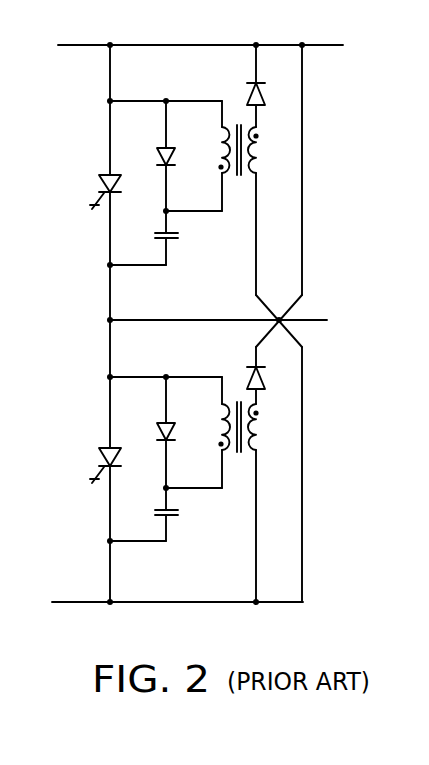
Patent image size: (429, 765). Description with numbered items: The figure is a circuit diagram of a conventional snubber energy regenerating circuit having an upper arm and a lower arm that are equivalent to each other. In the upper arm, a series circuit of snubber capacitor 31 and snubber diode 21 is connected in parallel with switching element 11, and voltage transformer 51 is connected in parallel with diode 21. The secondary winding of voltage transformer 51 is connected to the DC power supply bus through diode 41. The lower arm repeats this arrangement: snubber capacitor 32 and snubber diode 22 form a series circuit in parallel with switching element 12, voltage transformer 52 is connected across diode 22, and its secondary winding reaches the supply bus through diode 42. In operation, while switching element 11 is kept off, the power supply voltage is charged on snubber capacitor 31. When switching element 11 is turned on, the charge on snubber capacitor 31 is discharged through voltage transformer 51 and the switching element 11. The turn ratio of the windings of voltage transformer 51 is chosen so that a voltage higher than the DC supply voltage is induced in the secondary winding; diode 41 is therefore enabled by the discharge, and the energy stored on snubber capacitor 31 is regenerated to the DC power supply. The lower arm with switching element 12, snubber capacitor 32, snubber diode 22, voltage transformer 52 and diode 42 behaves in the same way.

The switching element 11 is at (101, 182).
The switching element 12 is at (101, 458).
The snubber diode 21 is at (178, 150).
The snubber diode 22 is at (179, 425).
The snubber capacitor 31 is at (178, 239).
The snubber capacitor 32 is at (180, 514).
The diode 41 is at (247, 85).
The diode 42 is at (247, 364).
The voltage transformer 51 is at (263, 153).
The voltage transformer 52 is at (258, 430).